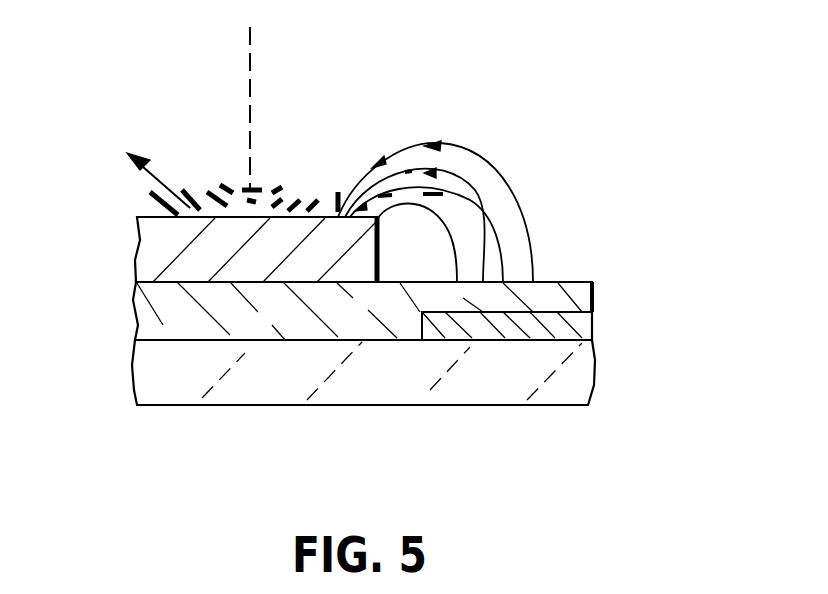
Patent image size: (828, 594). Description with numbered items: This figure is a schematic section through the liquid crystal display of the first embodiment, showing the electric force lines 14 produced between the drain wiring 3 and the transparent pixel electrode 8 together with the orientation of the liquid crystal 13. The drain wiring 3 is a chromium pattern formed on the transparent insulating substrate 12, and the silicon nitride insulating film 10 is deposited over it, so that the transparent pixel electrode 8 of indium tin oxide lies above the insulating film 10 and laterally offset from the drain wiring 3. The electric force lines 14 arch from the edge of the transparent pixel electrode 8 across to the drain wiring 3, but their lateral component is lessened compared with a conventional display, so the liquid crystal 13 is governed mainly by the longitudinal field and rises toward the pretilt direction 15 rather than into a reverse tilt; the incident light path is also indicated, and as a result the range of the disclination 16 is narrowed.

The drain wiring 3 is at (567, 327).
The transparent pixel electrode 8 is at (160, 240).
The insulating film 10 is at (580, 293).
The transparent insulating substrate 12 is at (412, 373).
The liquid crystal 13 is at (432, 140).
The electric force lines 14 is at (522, 203).
The pretilt direction 15 is at (158, 178).
The disclination 16 is at (253, 62).